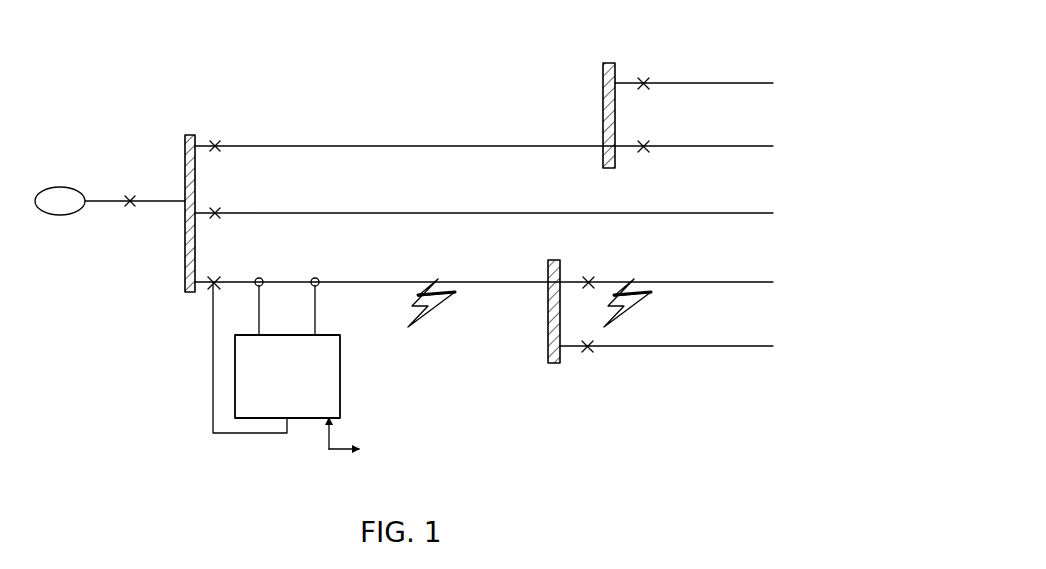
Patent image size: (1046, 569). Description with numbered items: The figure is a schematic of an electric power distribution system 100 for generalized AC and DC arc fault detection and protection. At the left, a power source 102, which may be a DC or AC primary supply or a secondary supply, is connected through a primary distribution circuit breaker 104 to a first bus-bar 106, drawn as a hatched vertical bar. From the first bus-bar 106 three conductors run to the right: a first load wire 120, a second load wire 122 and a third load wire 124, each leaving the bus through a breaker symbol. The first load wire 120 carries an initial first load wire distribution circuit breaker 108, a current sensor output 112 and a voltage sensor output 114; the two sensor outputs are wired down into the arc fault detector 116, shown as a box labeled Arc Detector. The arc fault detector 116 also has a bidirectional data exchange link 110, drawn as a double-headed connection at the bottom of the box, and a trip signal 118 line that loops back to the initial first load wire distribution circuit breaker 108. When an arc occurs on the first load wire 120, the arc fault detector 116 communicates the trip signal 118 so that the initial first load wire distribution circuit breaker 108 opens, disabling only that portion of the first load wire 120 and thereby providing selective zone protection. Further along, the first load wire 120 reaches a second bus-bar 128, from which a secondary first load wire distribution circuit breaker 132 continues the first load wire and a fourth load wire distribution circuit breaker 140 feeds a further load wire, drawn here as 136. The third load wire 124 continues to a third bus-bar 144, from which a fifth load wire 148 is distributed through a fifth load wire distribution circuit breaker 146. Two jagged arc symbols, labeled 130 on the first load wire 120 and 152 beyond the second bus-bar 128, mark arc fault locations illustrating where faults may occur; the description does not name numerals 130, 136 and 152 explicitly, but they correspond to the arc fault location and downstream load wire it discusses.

The electric power distribution system 100 is at (256, 46).
The power source 102 is at (60, 178).
The primary distribution circuit breaker 104 is at (135, 223).
The first bus-bar 106 is at (156, 209).
The initial first load wire distribution circuit breaker 108 is at (223, 262).
The bidirectional data exchange link 110 is at (335, 457).
The current sensor output 112 is at (274, 285).
The voltage sensor output 114 is at (330, 285).
The arc fault detector 116 is at (317, 376).
The trip signal 118 is at (221, 357).
The first load wire 120 is at (484, 304).
The second load wire 122 is at (484, 234).
The third load wire 124 is at (484, 167).
The second bus-bar 128 is at (521, 304).
The arc fault 130 is at (441, 314).
The secondary first load wire distribution circuit breaker 132 is at (597, 261).
The branch circuit 136 is at (666, 368).
The fourth load wire distribution circuit breaker 140 is at (596, 366).
The third bus-bar 144 is at (578, 113).
The fifth load wire distribution circuit breaker 146 is at (649, 96).
The fifth load wire 148 is at (694, 61).
The arc fault 152 is at (649, 303).